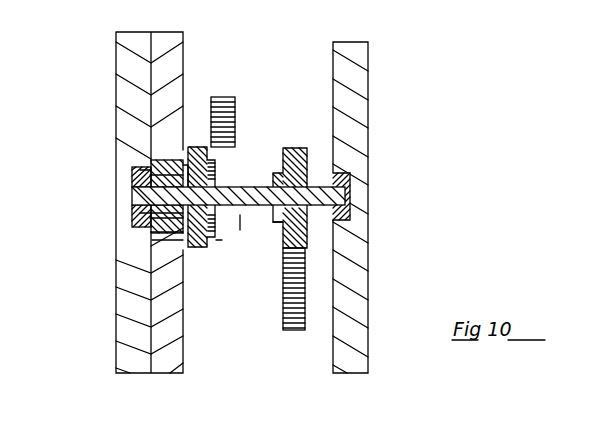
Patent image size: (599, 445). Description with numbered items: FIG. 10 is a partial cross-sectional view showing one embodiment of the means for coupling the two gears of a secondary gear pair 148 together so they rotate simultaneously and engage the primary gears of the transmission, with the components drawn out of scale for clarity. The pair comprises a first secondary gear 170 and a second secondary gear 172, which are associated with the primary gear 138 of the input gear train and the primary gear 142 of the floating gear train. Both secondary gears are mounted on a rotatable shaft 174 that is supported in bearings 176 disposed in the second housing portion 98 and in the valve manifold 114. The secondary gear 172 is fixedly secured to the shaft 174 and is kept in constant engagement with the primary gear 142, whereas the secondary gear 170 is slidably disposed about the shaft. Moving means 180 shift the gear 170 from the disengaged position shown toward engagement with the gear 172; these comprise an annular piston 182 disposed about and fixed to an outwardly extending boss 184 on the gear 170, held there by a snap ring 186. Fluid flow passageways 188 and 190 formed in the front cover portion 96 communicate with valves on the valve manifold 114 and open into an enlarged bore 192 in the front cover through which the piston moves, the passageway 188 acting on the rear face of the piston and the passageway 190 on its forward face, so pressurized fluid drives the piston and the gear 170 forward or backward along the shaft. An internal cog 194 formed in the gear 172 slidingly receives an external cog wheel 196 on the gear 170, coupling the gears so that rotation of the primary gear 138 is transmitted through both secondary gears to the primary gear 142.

The front cover portion 96 is at (162, 370).
The second housing portion 98 is at (370, 250).
The valve manifold 114 is at (165, 232).
The primary gear 138 is at (228, 97).
The primary gear 142 is at (293, 333).
The secondary gear pair 148 is at (270, 226).
The secondary gear 170 is at (200, 148).
The secondary gear 172 is at (290, 148).
The rotatable shaft 174 is at (254, 181).
The bearings 176 is at (358, 172).
The moving means 180 is at (138, 166).
The annular piston 182 is at (155, 163).
The outwardly extending boss 184 is at (142, 212).
The snap ring 186 is at (160, 216).
The fluid flow passageway 188 is at (156, 162).
The fluid flow passageway 190 is at (140, 248).
The enlarged bore 192 is at (188, 160).
The internal cog 194 is at (244, 223).
The external cog wheel 196 is at (220, 242).